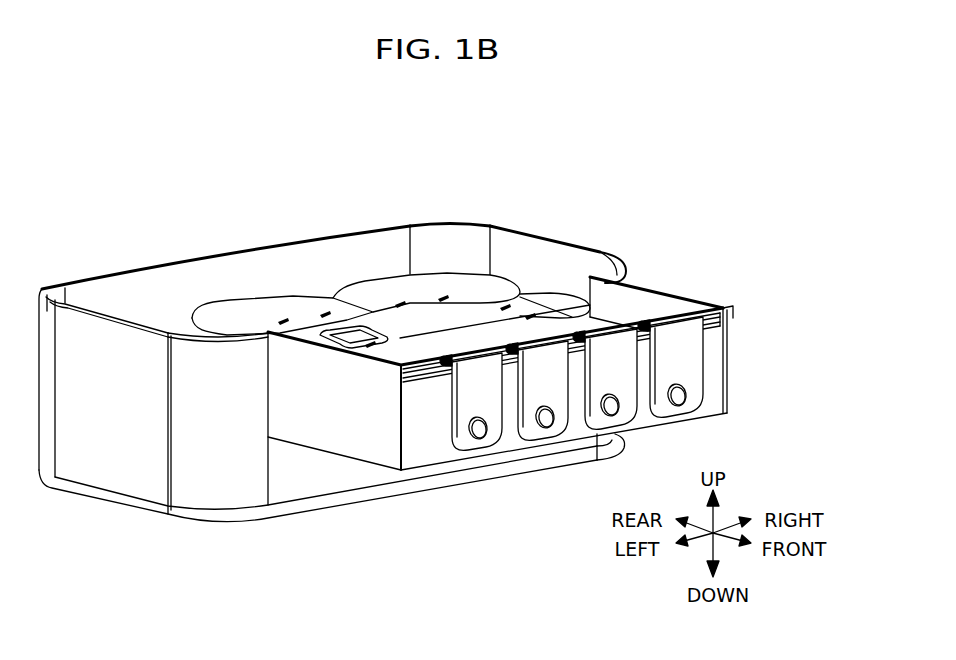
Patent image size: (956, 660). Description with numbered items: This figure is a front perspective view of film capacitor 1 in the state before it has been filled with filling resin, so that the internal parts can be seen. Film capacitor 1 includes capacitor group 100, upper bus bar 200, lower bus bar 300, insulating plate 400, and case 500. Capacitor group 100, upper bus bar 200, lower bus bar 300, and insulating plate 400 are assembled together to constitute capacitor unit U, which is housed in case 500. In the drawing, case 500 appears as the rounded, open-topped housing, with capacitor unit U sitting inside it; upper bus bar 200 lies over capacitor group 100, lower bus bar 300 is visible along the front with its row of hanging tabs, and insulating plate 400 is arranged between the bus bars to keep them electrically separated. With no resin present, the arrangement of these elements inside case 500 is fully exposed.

The film capacitor 1 is at (545, 165).
The capacitor group 100 is at (270, 305).
The upper bus bar 200 is at (540, 330).
The lower bus bar 300 is at (678, 360).
The insulating plate 400 is at (675, 320).
The case 500 is at (340, 232).
The capacitor unit U is at (457, 260).